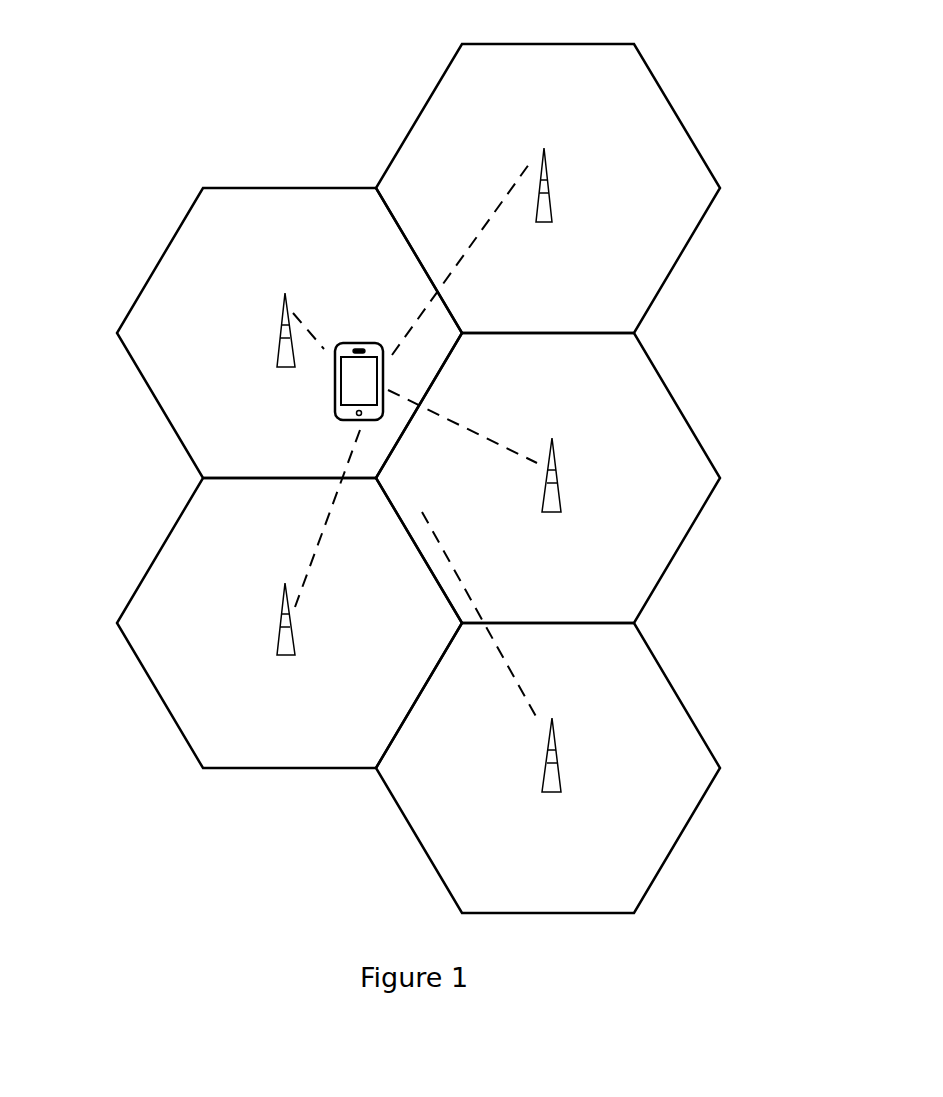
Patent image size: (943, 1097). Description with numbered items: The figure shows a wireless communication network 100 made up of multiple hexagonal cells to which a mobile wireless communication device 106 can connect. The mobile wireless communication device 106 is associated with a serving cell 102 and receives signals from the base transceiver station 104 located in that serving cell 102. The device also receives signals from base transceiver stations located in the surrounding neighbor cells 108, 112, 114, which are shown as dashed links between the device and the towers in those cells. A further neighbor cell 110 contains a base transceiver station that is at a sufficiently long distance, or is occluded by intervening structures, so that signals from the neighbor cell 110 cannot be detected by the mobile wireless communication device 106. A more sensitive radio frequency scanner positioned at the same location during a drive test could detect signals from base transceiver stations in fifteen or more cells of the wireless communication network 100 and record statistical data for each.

The wireless communication network 100 is at (113, 82).
The serving cell 102 is at (188, 212).
The base transceiver station 104 is at (295, 305).
The mobile wireless communication device 106 is at (333, 383).
The neighbor cell 108 is at (682, 413).
The neighbor cell 110 is at (682, 698).
The neighbor cell 112 is at (680, 120).
The neighbor cell 114 is at (162, 697).